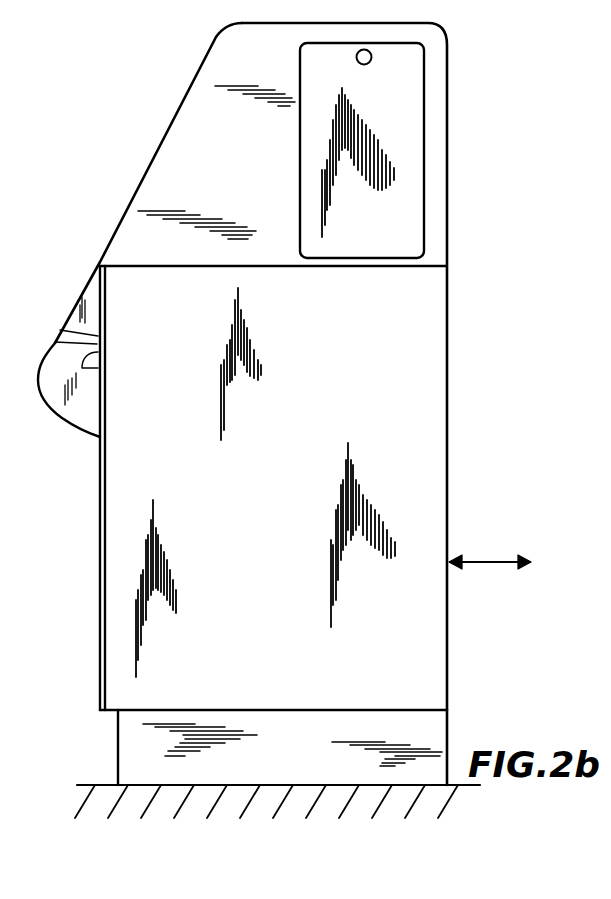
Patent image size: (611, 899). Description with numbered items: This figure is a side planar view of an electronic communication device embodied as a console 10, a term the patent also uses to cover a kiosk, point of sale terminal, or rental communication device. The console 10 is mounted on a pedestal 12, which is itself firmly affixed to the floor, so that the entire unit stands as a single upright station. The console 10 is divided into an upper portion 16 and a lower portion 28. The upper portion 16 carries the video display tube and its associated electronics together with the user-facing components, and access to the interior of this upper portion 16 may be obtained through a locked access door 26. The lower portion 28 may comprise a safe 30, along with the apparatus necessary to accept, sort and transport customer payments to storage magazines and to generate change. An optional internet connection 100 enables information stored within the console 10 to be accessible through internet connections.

The console 10 is at (161, 80).
The pedestal 12 is at (303, 766).
The upper portion 16 is at (96, 227).
The locked access door 26 is at (322, 178).
The lower portion 28 is at (91, 606).
The safe 30 is at (100, 682).
The internet connection 100 is at (487, 560).